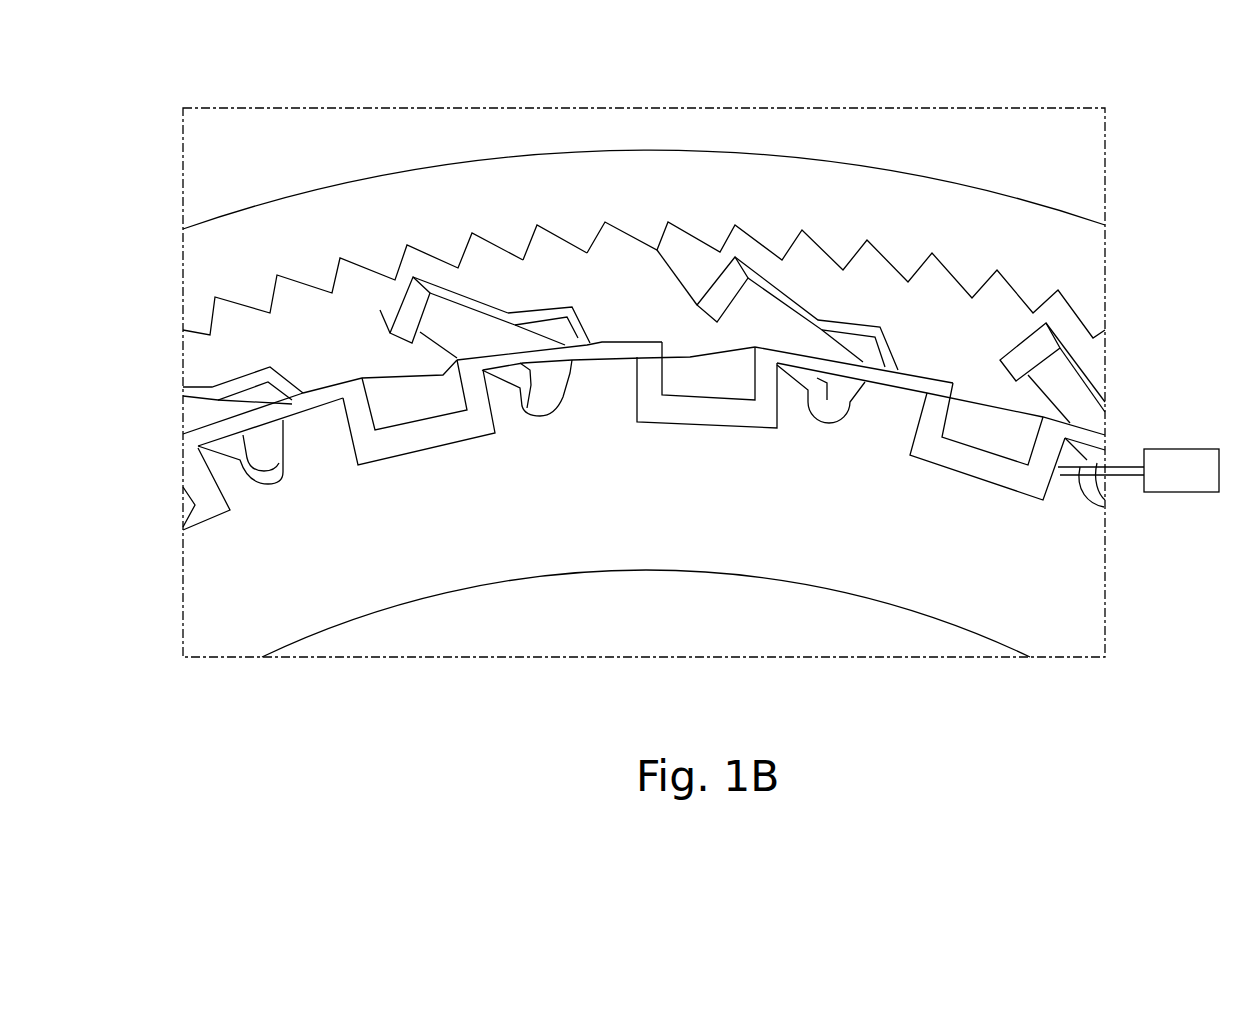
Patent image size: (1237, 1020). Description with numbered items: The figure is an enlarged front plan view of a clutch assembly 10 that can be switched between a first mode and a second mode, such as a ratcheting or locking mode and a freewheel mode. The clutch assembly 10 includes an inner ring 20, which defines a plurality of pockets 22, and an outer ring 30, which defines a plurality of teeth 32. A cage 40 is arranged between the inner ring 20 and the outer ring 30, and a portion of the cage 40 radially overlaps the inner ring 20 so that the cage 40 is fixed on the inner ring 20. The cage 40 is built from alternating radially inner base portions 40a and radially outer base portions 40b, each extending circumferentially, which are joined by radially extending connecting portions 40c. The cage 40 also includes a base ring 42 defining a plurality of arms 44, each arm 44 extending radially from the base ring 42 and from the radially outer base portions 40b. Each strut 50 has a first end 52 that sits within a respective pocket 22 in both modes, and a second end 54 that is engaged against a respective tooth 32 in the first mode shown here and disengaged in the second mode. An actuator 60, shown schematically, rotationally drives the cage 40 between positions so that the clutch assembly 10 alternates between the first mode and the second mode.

The clutch assembly 10 is at (990, 159).
The inner ring 20 is at (795, 481).
The pocket 22 is at (280, 473).
The outer ring 30 is at (822, 186).
The tooth 32 is at (548, 234).
The cage 40 is at (701, 409).
The radially inner base portion 40a is at (428, 440).
The radially outer base portion 40b is at (580, 353).
The connecting portion 40c is at (355, 417).
The base ring 42 is at (617, 335).
The arm 44 is at (578, 315).
The strut 50 is at (1002, 309).
The first end 52 is at (540, 390).
The second end 54 is at (695, 265).
The actuator 60 is at (1183, 481).